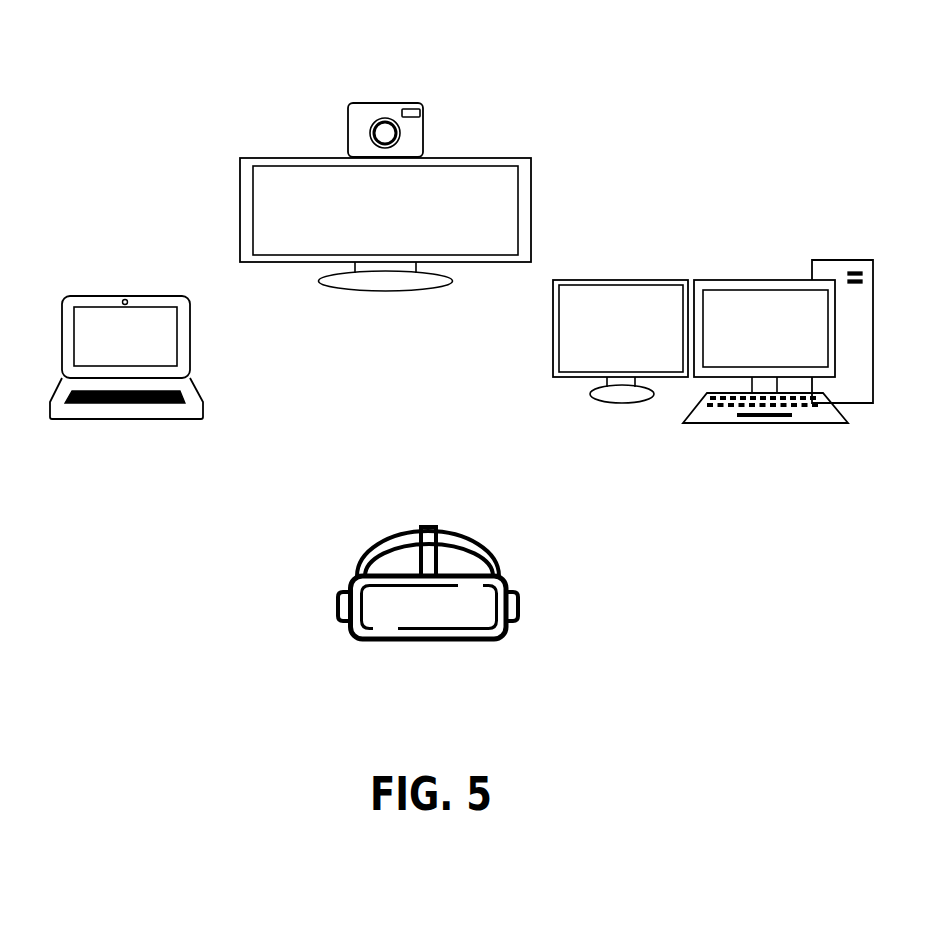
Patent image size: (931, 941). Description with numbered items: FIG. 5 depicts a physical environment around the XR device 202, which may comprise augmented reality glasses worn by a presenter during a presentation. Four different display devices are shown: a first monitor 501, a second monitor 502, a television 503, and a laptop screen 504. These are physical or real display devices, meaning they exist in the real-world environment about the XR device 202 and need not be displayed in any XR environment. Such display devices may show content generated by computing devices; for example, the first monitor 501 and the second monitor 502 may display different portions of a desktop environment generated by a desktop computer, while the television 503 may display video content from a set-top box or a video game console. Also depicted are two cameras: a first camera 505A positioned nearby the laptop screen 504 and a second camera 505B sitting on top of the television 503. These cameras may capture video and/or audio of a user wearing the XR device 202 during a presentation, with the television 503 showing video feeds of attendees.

The first monitor 501 is at (770, 280).
The second monitor 502 is at (630, 280).
The television 503 is at (520, 159).
The laptop screen 504 is at (140, 323).
The first camera 505A is at (136, 294).
The second camera 505B is at (412, 103).
The XR device 202 is at (428, 623).